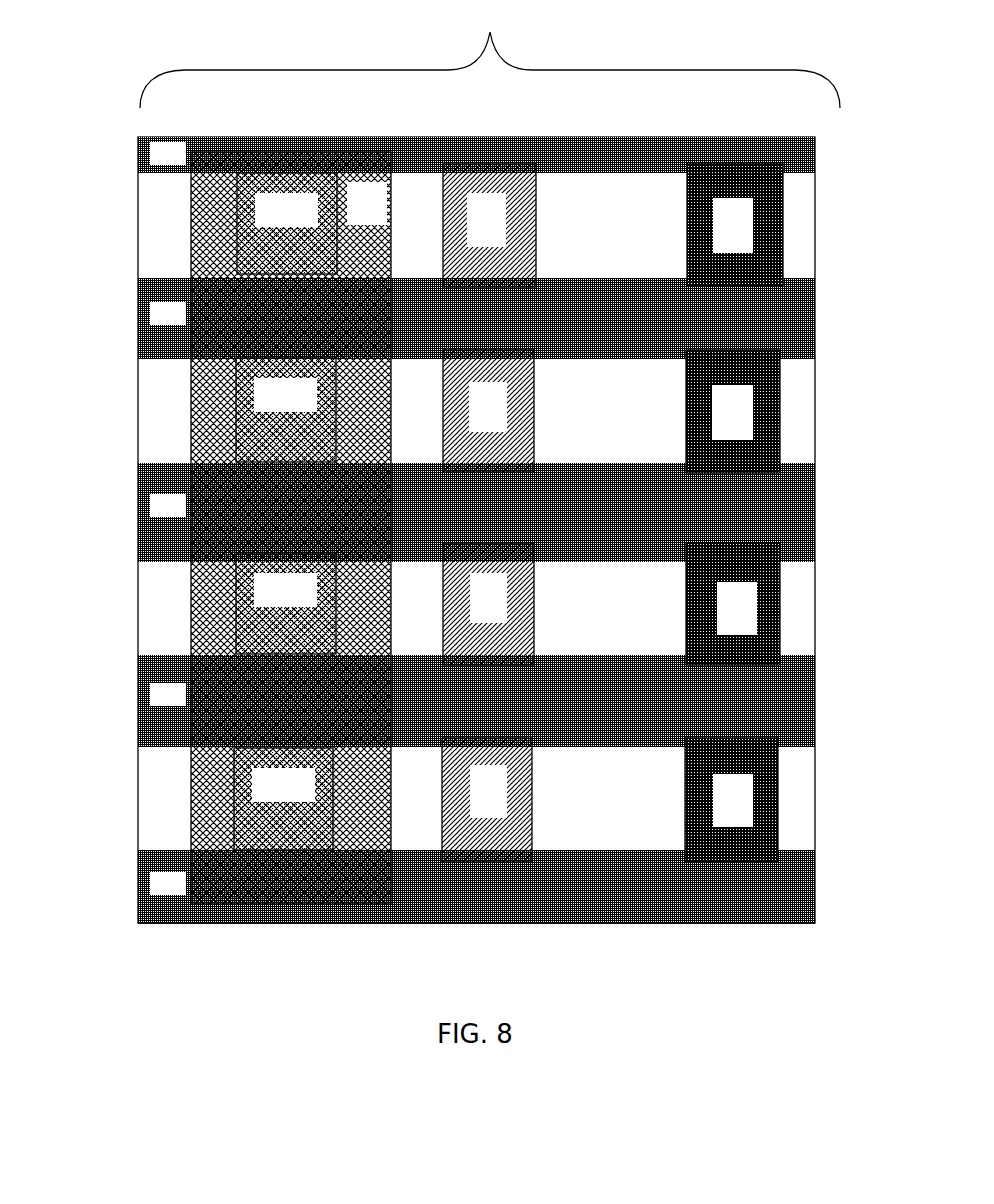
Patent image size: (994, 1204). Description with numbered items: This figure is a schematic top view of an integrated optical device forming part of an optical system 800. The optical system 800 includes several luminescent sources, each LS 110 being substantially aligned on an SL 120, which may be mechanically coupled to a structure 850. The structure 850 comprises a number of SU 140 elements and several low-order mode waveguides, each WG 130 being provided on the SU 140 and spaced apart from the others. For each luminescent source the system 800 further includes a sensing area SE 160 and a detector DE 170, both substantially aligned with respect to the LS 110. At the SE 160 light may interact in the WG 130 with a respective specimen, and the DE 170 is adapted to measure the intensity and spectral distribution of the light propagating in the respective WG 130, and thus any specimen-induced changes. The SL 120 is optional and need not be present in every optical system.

The optical system 800 is at (489, 461).
The luminescent source (LS) 110 is at (206, 511).
The SL 120 is at (355, 176).
The low-order mode waveguide (WG) 130 is at (476, 503).
The SU 140 is at (115, 530).
The sensing area (SE) 160 is at (526, 513).
The detector (DE) 170 is at (786, 512).
The structure 850 is at (660, 928).